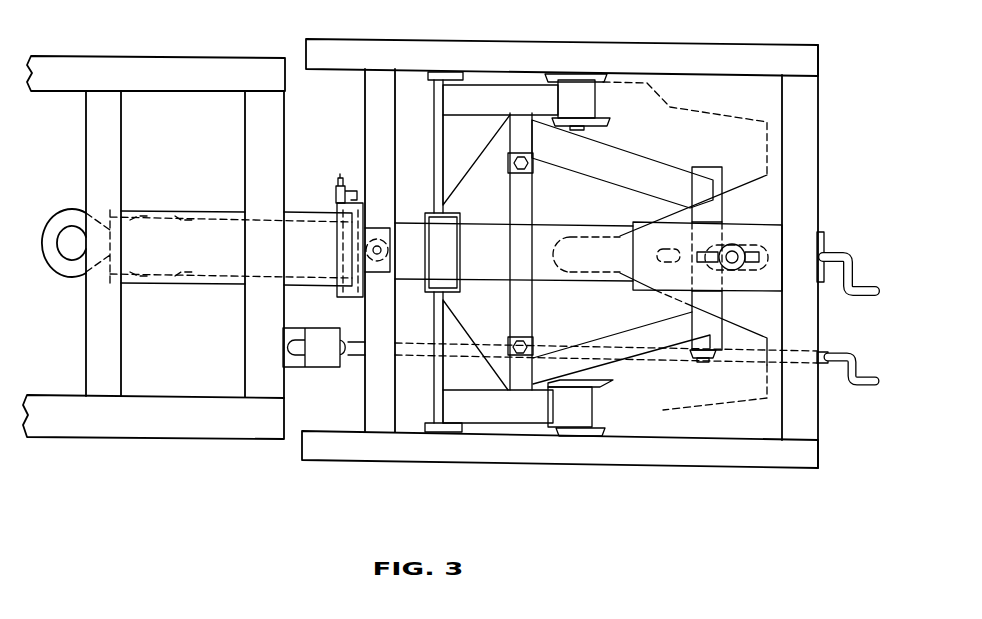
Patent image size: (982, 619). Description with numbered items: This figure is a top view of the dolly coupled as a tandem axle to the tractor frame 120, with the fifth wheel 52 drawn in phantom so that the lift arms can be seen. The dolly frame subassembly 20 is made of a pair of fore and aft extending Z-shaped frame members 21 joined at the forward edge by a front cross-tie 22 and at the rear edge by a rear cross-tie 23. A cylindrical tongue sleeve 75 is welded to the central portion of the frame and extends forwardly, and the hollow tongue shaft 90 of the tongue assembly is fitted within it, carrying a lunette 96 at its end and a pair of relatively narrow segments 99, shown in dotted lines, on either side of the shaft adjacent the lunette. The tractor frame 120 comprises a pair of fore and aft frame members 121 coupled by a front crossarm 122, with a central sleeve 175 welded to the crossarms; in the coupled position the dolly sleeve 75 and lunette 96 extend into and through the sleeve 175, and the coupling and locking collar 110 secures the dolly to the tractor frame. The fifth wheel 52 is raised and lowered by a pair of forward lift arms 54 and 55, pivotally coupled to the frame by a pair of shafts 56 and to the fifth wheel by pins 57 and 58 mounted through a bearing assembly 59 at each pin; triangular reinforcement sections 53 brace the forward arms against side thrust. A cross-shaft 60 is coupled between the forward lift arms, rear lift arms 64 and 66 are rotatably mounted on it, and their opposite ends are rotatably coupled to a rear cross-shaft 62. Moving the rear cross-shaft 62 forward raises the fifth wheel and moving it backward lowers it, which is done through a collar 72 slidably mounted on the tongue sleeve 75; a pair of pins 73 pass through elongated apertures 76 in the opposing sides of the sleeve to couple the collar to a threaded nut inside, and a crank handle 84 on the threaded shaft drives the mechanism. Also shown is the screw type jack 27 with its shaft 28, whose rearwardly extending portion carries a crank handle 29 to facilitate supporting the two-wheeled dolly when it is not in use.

The frame subassembly 20 is at (564, 256).
The Z-shaped frame members 21 is at (695, 44).
The front cross-tie 22 is at (368, 101).
The rear cross-tie 23 is at (282, 132).
The jack 27 is at (320, 368).
The shaft 28 is at (546, 346).
The crank handle 29 is at (851, 360).
The fifth wheel 52 is at (697, 108).
The triangular reinforcement sections 53 is at (450, 151).
The forward lift arm 54 is at (491, 414).
The forward lift arm 55 is at (497, 108).
The shafts 56 is at (436, 148).
The pin 57 is at (598, 383).
The pin 58 is at (580, 72).
The bearing assembly 59 is at (597, 102).
The cross-shaft 60 is at (527, 196).
The rear cross-shaft 62 is at (700, 168).
The rear lift arm 64 is at (657, 341).
The rear lift arm 66 is at (601, 174).
The collar 72 is at (745, 222).
The pins 73 is at (737, 272).
The tongue sleeve 75 is at (574, 226).
The elongated apertures 76 is at (663, 250).
The crank handle 84 is at (849, 256).
The tongue shaft 90 is at (135, 210).
The lunette 96 is at (65, 213).
The narrow segments 99 is at (163, 210).
The coupling and locking collar 110 is at (348, 298).
The tractor frame 120 is at (154, 268).
The frame members 121 is at (182, 55).
The front crossarm 122 is at (123, 133).
The sleeve 175 is at (213, 208).